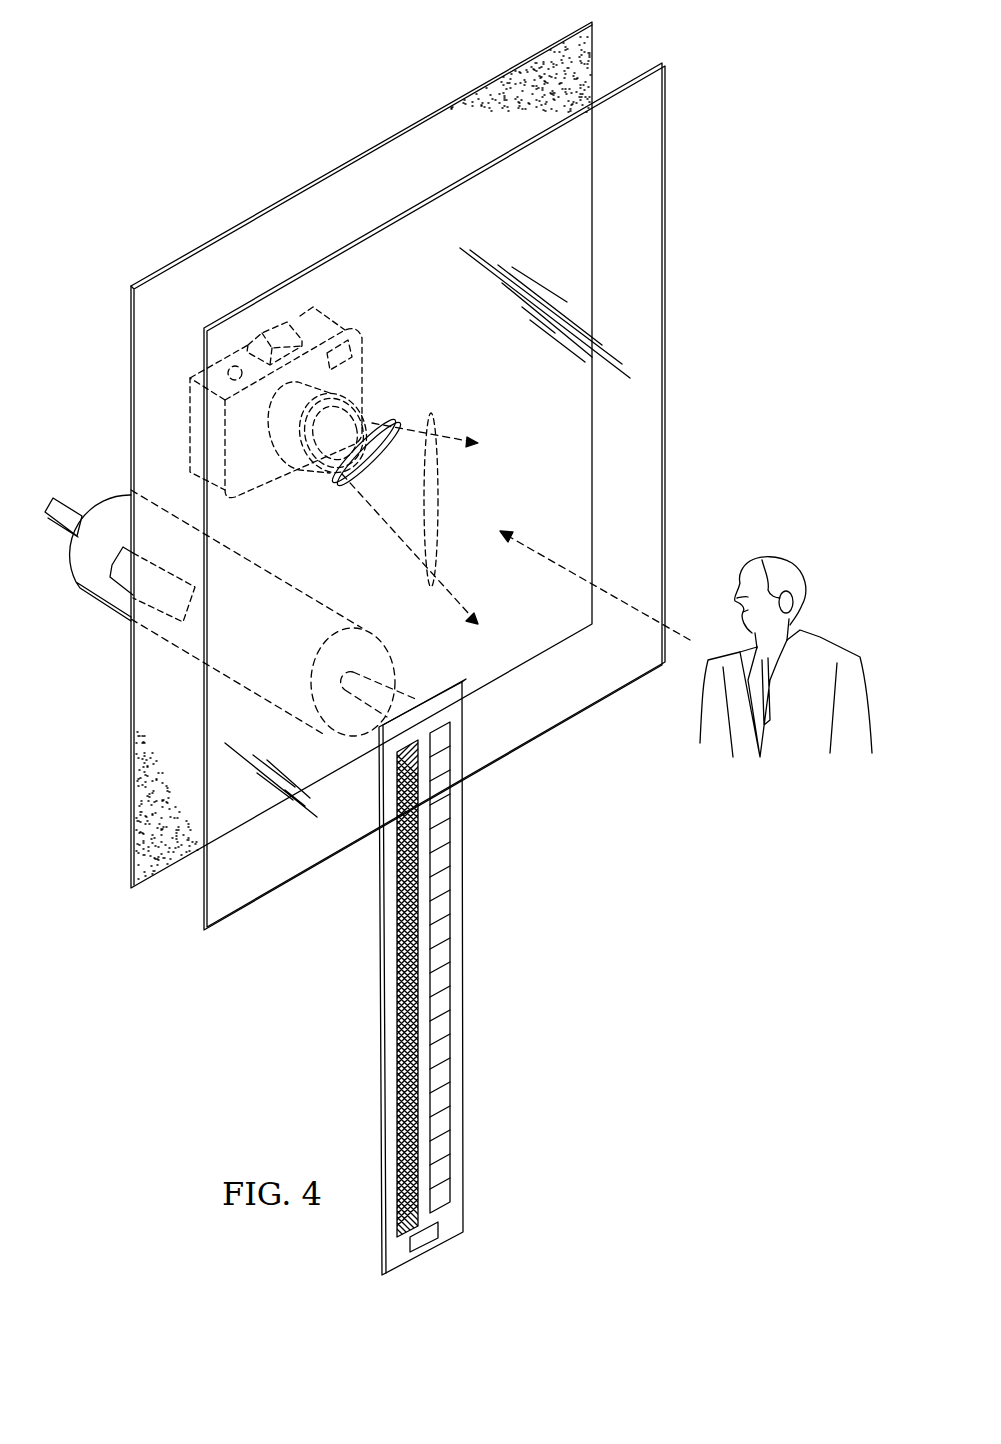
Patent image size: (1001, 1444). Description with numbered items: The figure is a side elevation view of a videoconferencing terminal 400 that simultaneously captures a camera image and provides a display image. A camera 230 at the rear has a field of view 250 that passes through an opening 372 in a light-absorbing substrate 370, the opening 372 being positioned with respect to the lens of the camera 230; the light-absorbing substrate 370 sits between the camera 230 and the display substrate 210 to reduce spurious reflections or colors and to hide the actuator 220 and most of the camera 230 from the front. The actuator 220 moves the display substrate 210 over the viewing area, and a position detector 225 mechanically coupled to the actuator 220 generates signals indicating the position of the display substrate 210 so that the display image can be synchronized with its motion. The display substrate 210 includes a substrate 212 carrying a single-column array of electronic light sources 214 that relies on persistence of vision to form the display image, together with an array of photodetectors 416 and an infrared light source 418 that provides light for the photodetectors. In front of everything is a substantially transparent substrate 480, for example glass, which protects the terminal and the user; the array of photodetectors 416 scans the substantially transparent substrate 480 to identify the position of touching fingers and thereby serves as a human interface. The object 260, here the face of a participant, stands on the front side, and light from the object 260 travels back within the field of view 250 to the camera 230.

The videoconferencing terminal 400 is at (170, 168).
The substantially transparent substrate 480 is at (667, 203).
The light-absorbing substrate 370 is at (130, 782).
The camera 230 is at (336, 320).
The field of view 250 is at (431, 413).
The opening 372 is at (332, 488).
The actuator 220 is at (117, 500).
The position detector 225 is at (118, 588).
The object 260 is at (772, 557).
The display substrate 210 is at (485, 1018).
The substrate 212 is at (380, 1012).
The array of electronic light sources 214 is at (392, 925).
The array of photodetectors 416 is at (448, 868).
The infrared light source 418 is at (423, 1238).